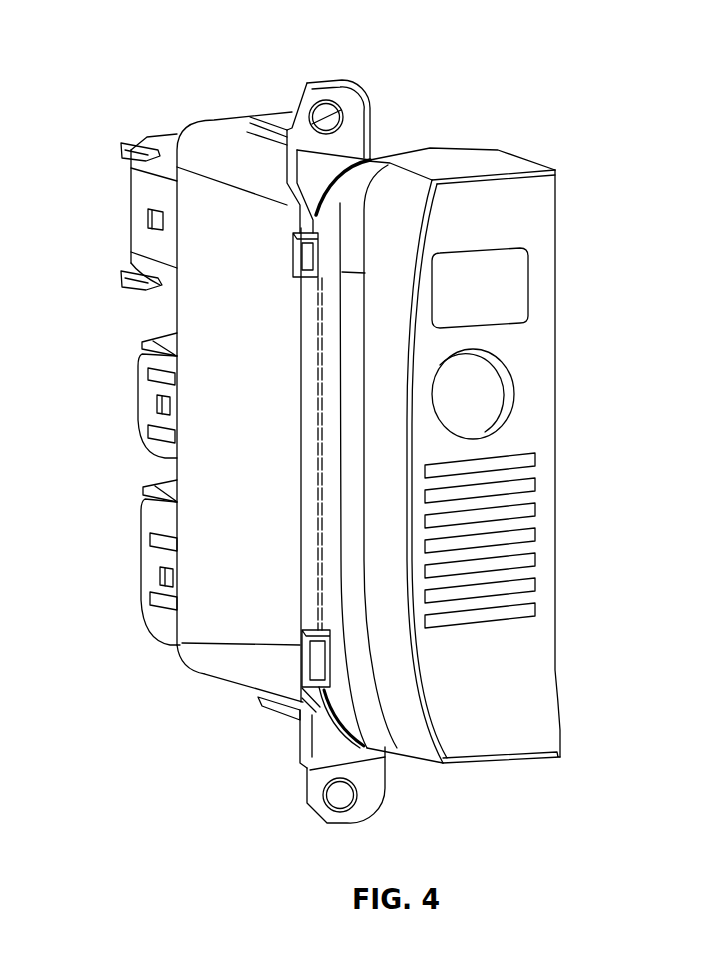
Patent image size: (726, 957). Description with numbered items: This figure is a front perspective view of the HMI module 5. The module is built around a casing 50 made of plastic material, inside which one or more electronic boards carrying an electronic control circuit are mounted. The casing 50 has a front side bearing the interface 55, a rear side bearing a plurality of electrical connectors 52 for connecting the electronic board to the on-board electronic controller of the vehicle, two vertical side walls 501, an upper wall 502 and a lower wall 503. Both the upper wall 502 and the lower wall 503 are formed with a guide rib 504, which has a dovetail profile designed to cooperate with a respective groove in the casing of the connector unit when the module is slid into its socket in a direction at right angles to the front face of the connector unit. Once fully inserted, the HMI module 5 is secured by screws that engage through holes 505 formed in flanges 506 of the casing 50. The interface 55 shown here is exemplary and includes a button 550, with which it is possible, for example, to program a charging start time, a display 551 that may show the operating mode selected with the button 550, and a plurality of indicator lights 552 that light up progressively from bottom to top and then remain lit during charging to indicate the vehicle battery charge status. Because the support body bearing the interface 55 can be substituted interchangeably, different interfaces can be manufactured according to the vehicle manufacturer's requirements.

The HMI module 5 is at (566, 128).
The casing 50 is at (207, 680).
The electrical connectors 52 is at (143, 233).
The interface 55 is at (530, 710).
The vertical side walls 501 is at (205, 555).
The upper wall 502 is at (392, 150).
The lower wall 503 is at (233, 685).
The guide rib 504 is at (283, 123).
The holes 505 is at (345, 812).
The flanges 506 is at (362, 122).
The button 550 is at (497, 393).
The display 551 is at (495, 290).
The indicator lights 552 is at (510, 490).